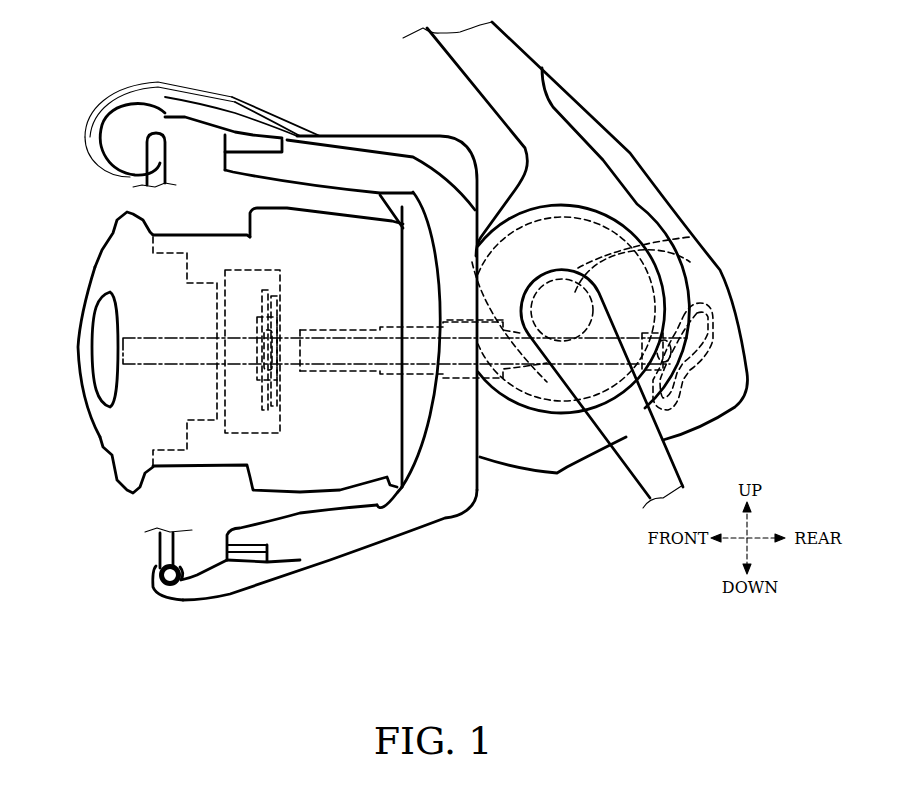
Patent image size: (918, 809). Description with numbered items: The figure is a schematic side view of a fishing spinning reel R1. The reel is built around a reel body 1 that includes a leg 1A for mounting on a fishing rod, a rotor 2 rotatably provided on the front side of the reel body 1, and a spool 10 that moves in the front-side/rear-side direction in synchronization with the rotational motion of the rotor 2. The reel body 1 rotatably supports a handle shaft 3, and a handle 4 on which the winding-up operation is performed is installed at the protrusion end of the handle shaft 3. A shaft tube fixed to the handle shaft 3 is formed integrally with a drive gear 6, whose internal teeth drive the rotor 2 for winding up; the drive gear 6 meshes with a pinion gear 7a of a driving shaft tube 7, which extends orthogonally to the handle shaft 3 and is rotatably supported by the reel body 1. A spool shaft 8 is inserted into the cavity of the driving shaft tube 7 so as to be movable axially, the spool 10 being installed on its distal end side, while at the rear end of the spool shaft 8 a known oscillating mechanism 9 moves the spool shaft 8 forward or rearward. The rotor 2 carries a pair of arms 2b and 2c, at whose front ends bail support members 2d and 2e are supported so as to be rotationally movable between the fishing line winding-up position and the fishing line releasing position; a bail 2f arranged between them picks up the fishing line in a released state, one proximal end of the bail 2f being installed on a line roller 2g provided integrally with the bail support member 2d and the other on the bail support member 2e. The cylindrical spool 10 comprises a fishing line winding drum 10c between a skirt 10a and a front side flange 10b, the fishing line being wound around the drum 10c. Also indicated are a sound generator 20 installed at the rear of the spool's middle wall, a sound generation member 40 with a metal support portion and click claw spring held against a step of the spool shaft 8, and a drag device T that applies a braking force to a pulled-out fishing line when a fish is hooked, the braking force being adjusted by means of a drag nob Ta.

The reel body 1 is at (593, 177).
The leg 1A is at (517, 65).
The fishing spinning reel R1 is at (664, 105).
The rotor 2 is at (360, 136).
The arm 2b is at (395, 136).
The arm 2c is at (387, 515).
The bail support member 2d is at (223, 103).
The bail support member 2e is at (237, 577).
The bail 2f is at (155, 158).
The line roller 2g is at (118, 125).
The handle shaft 3 is at (571, 290).
The handle 4 is at (667, 467).
The drive gear 6 is at (667, 287).
The driving shaft tube 7 is at (358, 330).
The pinion gear 7a is at (457, 318).
The spool shaft 8 is at (340, 353).
The oscillating mechanism 9 is at (718, 352).
The spool 10 is at (208, 184).
The skirt 10a is at (281, 232).
The front side flange 10b is at (140, 212).
The fishing line winding drum 10c is at (165, 117).
The sound generator 20 is at (220, 315).
The sound generation member 40 is at (252, 394).
The drag device T is at (124, 418).
The drag nob Ta is at (78, 305).